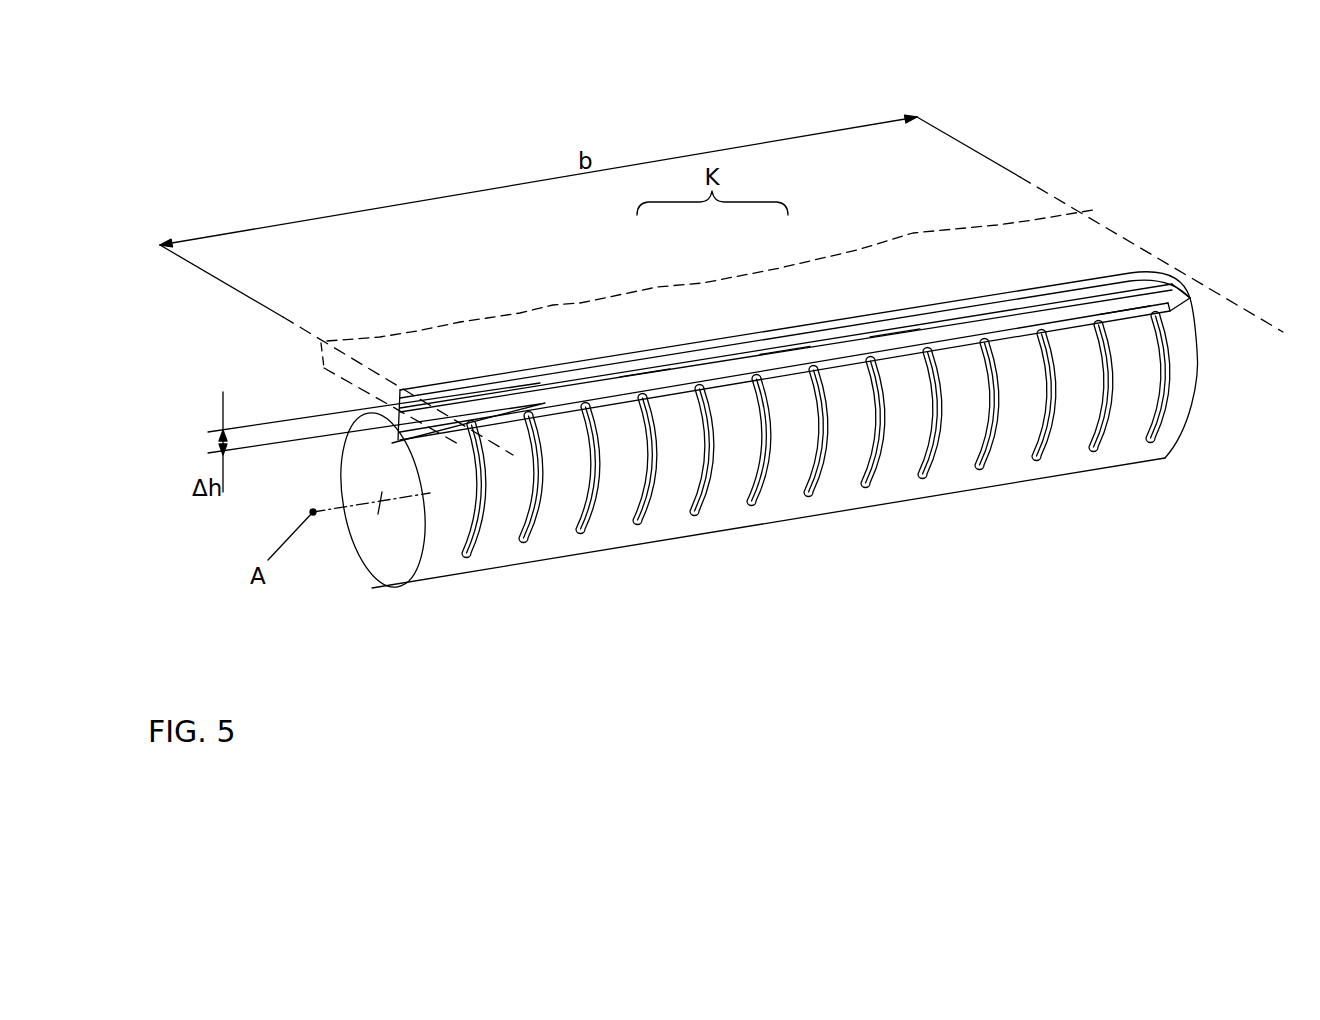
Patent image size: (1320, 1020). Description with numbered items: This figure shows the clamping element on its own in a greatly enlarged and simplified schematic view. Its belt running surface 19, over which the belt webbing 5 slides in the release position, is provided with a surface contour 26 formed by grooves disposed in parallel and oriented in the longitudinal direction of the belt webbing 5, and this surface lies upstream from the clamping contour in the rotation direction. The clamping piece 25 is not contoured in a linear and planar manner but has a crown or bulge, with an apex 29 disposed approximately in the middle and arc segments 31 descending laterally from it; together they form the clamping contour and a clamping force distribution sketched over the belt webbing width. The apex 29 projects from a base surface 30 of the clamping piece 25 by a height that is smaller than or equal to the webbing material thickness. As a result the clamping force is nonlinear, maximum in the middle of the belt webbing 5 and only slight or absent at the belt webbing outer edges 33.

The belt webbing 5 is at (486, 313).
The belt running surface 19 is at (1173, 387).
The clamping piece 25 is at (967, 295).
The surface contour 26 is at (636, 512).
The apex 29 is at (783, 350).
The base surface 30 is at (1123, 310).
The arc segments 31 is at (643, 375).
The belt webbing outer edges 33 is at (360, 363).